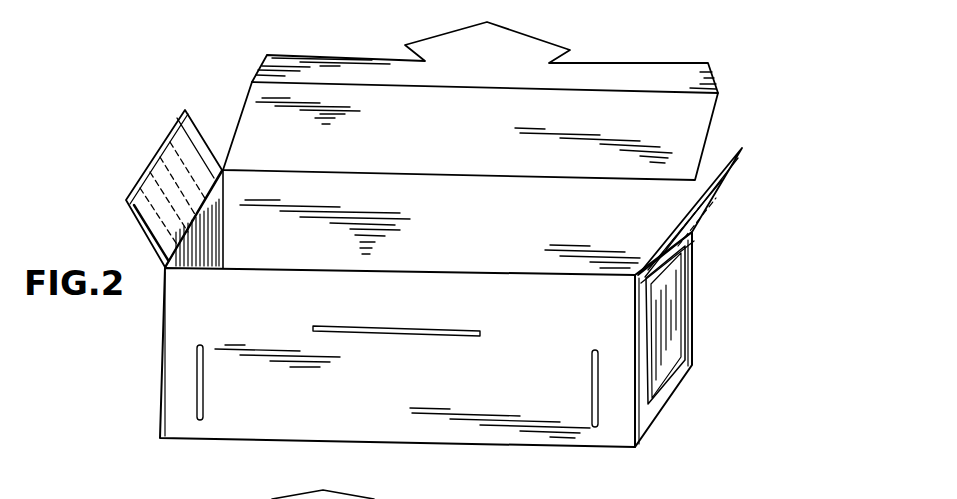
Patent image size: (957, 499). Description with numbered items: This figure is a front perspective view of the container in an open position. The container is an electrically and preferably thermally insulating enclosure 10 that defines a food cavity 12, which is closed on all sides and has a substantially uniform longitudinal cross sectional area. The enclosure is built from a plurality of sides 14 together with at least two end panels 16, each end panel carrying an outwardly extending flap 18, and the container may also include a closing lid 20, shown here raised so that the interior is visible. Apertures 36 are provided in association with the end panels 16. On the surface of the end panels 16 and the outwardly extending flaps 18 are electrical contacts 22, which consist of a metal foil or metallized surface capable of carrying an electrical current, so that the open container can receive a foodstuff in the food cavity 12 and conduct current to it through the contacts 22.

The enclosure 10 is at (672, 47).
The food cavity 12 is at (248, 184).
The sides 14 is at (417, 434).
The end panels 16 is at (160, 348).
The outwardly extending flaps 18 is at (126, 200).
The closing lid 20 is at (482, 132).
The electrical contacts 22 is at (156, 176).
The apertures 36 is at (667, 363).